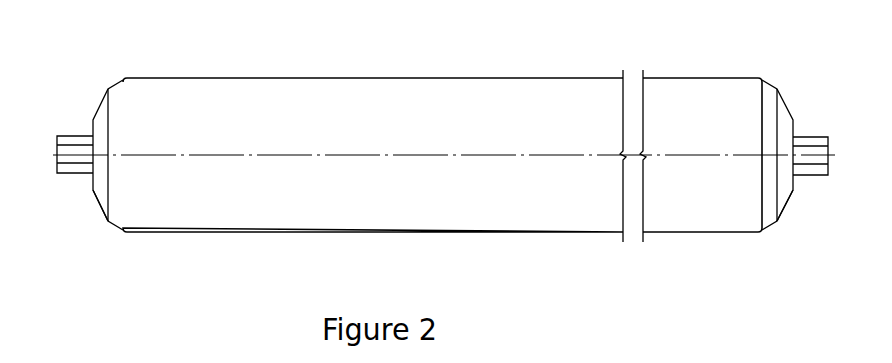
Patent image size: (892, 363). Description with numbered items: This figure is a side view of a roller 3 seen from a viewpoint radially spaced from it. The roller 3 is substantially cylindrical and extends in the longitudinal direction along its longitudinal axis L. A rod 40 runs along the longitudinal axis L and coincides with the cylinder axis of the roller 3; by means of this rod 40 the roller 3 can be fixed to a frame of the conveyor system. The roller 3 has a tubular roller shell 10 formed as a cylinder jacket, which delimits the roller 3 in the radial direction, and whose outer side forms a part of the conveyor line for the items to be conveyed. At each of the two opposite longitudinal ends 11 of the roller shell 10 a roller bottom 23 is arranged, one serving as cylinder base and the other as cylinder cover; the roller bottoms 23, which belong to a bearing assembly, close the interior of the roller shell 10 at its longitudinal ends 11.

The roller 3 is at (852, 68).
The roller shell 10 is at (315, 232).
The longitudinal end of the roller shell 11 is at (127, 80).
The roller bottom 23 is at (114, 215).
The rod 40 is at (75, 140).
The longitudinal axis L is at (320, 155).